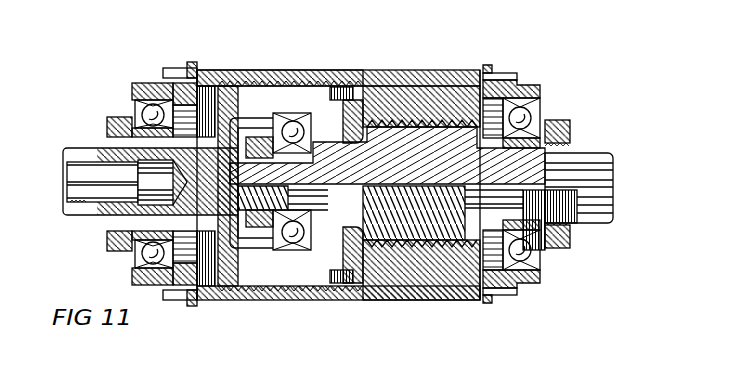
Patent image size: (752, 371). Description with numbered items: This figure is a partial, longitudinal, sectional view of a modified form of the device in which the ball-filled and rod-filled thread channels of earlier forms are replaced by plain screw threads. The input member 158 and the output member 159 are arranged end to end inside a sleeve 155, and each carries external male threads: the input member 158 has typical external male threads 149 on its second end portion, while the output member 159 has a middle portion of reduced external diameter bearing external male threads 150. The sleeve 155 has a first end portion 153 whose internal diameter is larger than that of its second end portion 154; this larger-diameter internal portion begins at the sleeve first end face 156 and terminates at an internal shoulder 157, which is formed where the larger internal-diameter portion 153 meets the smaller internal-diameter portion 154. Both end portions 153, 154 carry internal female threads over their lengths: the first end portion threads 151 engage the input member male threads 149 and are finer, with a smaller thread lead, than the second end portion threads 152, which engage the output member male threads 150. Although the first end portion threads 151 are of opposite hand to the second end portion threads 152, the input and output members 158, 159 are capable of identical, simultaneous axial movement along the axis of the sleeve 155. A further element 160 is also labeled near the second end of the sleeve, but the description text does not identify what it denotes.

The input member male threads 149 is at (247, 77).
The output member male threads 150 is at (405, 135).
The sleeve first end portion female threads 151 is at (163, 80).
The sleeve second end portion female threads 152 is at (608, 155).
The sleeve first end portion 153 is at (292, 76).
The sleeve second end portion 154 is at (460, 77).
The sleeve 155 is at (387, 77).
The sleeve first end face 156 is at (190, 70).
The internal shoulder 157 is at (353, 77).
The input member 158 is at (218, 169).
The output member 159 is at (428, 170).
The right bearing cup 160 is at (478, 140).